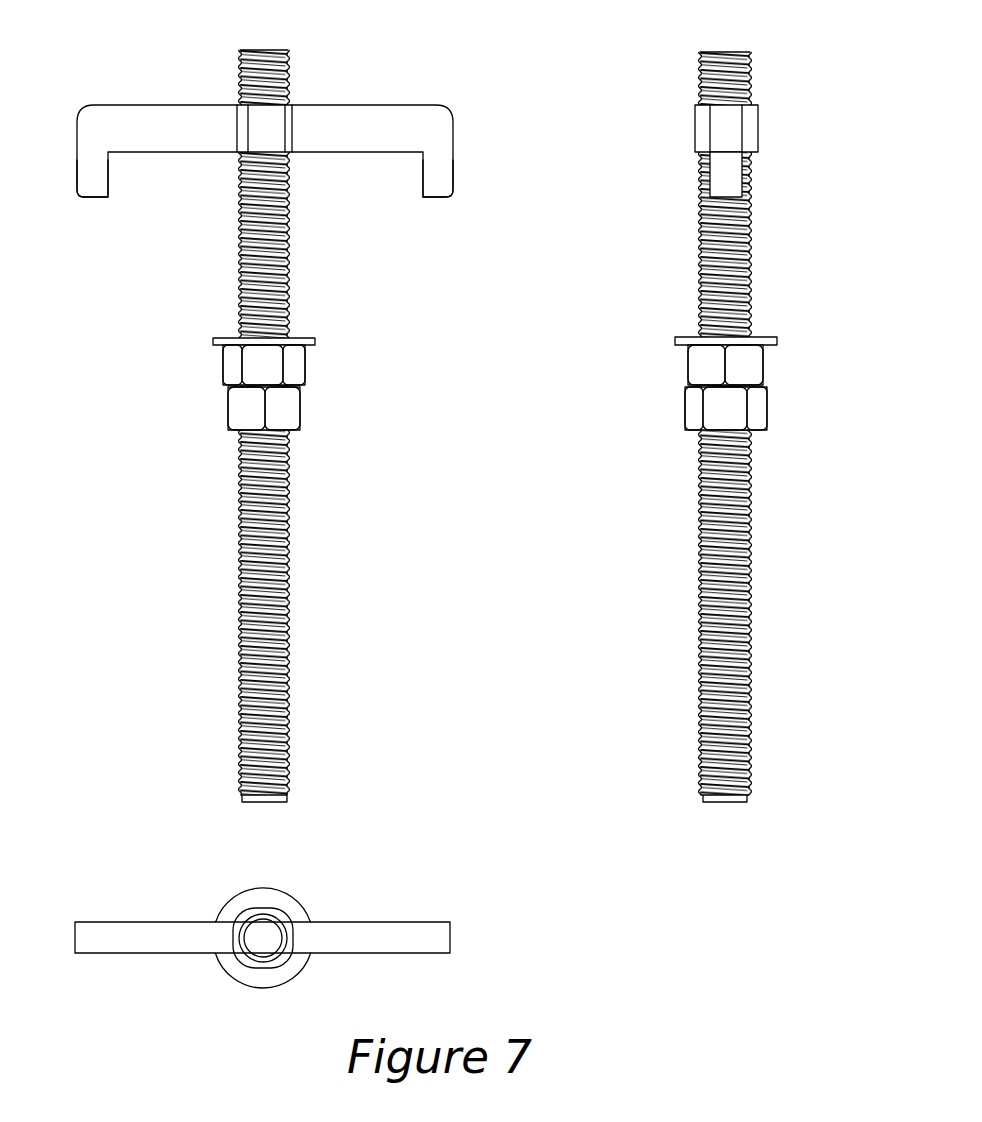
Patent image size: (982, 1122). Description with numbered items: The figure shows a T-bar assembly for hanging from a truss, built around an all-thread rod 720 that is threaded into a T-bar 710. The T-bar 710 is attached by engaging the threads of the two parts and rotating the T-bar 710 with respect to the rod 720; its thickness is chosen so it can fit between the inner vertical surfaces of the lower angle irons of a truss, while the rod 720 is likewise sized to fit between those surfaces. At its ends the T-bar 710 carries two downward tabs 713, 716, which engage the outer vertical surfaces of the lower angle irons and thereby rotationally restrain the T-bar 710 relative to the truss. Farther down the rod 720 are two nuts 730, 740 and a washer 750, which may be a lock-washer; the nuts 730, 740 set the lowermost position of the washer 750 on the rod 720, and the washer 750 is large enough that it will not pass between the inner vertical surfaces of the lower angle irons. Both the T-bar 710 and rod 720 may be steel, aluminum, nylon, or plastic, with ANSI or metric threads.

The T-bar 710 is at (355, 105).
The tab 713 is at (92, 198).
The tab 716 is at (433, 198).
The threaded rod 720 is at (238, 590).
The nut 730 is at (223, 367).
The nut 740 is at (300, 408).
The washer 750 is at (305, 338).